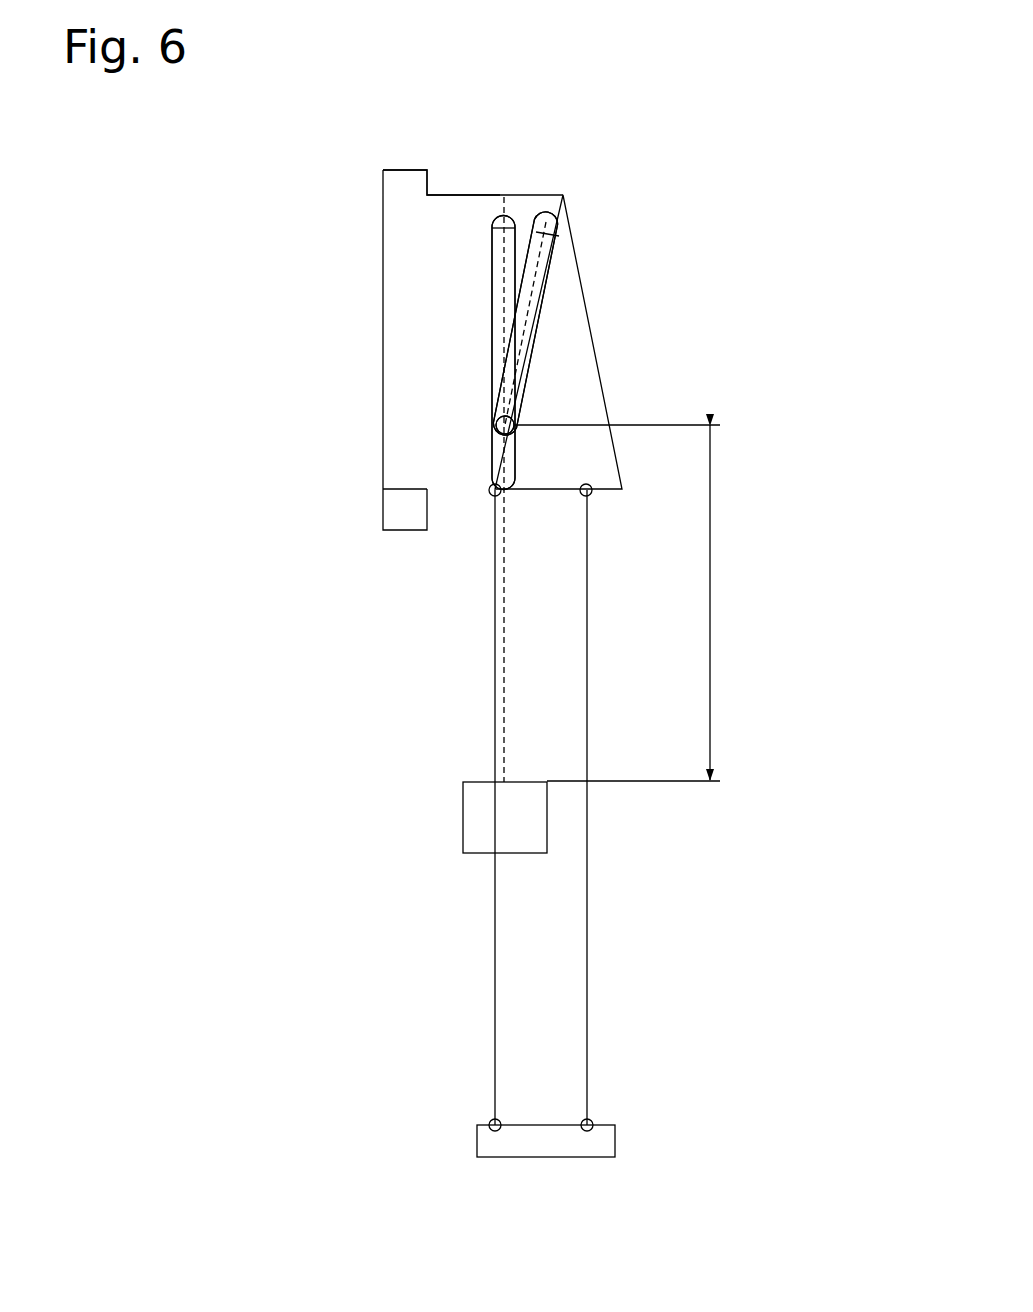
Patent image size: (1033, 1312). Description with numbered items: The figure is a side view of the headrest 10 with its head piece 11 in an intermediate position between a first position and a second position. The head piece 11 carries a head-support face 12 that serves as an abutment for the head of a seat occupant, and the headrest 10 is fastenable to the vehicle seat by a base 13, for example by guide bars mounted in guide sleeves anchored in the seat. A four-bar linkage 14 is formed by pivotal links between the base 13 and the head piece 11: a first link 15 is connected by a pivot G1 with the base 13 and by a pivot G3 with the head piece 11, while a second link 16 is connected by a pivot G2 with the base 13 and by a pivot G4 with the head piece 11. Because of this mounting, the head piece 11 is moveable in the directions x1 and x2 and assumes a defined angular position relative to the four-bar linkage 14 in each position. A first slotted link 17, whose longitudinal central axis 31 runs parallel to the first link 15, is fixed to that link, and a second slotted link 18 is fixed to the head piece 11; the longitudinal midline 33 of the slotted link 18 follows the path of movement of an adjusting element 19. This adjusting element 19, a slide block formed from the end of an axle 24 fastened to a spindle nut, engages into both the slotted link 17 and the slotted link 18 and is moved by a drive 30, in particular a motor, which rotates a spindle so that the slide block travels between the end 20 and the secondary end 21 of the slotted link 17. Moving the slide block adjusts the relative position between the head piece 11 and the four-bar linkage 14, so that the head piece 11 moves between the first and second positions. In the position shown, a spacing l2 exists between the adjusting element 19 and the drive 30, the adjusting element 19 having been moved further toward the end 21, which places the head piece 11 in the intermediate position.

The headrest 10 is at (777, 135).
The head piece 11 is at (418, 228).
The head-support face 12 is at (372, 346).
The base 13 is at (553, 1133).
The four-bar linkage 14 is at (322, 716).
The first link 15 is at (495, 978).
The second link 16 is at (587, 925).
The first slotted link 17 is at (492, 287).
The second slotted link 18 is at (527, 280).
The adjusting element 19 is at (515, 420).
The end of the slotted link 20 is at (585, 228).
The secondary end 21 is at (470, 467).
The axle 24 is at (515, 432).
The drive 30 is at (482, 820).
The longitudinal central axis 31 is at (490, 247).
The longitudinal midline 33 is at (562, 193).
The pivot G1 is at (491, 1122).
The pivot G2 is at (591, 1122).
The pivot G3 is at (490, 497).
The pivot G4 is at (591, 495).
The spacing l2 is at (710, 603).
The direction x1 is at (188, 209).
The direction x2 is at (282, 209).